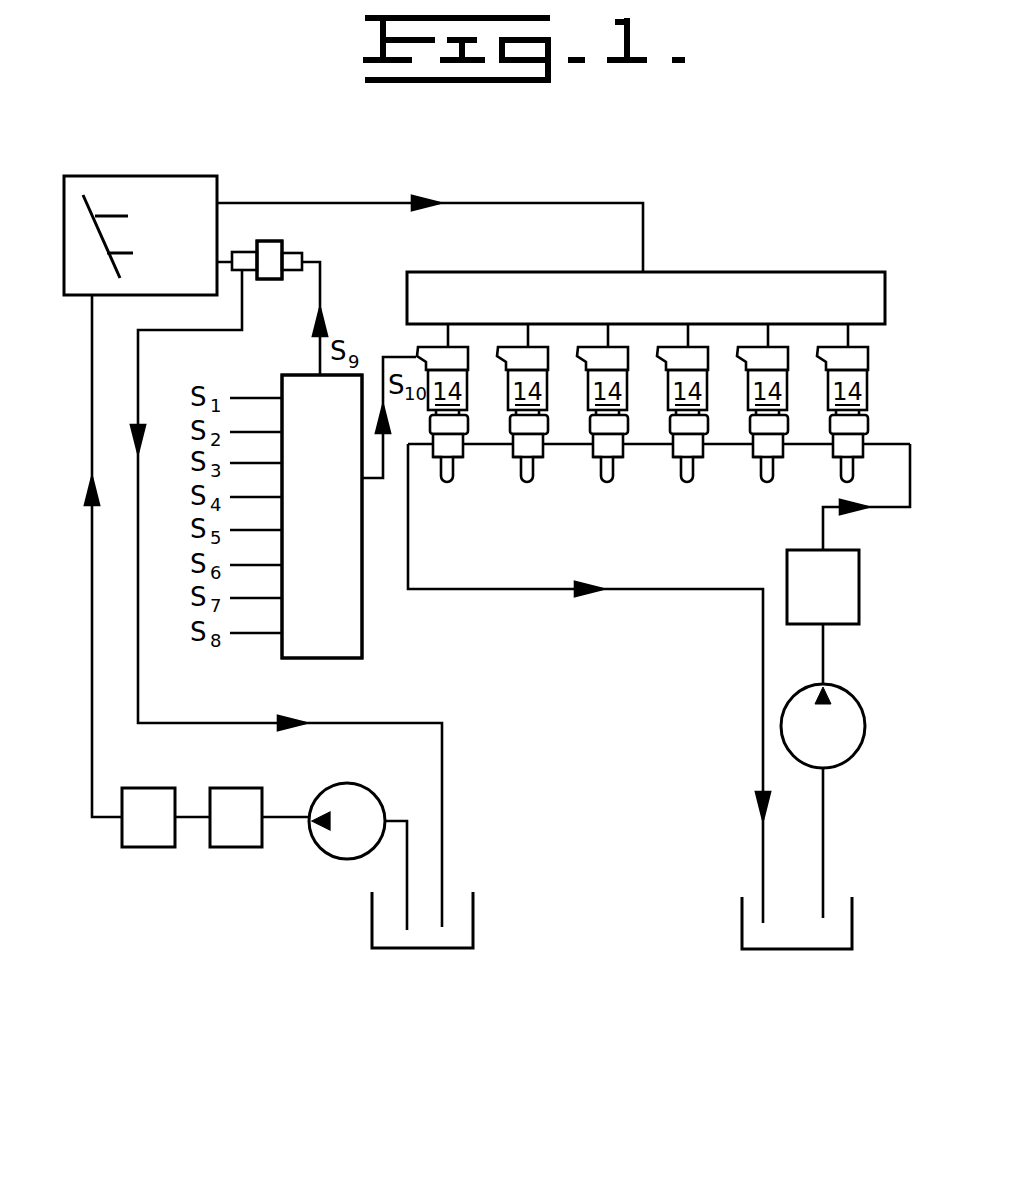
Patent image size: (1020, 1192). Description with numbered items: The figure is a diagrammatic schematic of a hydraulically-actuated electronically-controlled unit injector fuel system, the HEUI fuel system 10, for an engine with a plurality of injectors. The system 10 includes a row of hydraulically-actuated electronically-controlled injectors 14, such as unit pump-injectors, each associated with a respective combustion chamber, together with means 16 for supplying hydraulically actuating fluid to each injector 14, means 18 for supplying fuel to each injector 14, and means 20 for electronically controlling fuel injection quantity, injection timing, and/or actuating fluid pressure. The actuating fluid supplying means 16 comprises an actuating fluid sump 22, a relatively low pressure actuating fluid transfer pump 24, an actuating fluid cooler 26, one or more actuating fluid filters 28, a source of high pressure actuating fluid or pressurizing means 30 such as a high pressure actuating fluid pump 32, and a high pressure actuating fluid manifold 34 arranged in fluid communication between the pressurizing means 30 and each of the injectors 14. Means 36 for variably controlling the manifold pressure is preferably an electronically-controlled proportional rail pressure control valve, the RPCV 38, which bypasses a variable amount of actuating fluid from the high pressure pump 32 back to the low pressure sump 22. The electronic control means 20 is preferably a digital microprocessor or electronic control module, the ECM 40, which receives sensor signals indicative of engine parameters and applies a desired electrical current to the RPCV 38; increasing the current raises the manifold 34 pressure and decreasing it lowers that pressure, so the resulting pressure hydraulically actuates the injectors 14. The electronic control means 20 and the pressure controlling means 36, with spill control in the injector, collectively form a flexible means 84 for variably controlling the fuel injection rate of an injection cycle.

The HEUI fuel system 10 is at (798, 158).
The hydraulically-actuated electronically-controlled injectors 14 is at (642, 403).
The means for supplying hydraulically actuating fluid 16 is at (452, 988).
The means for supplying fuel 18 is at (778, 977).
The means for electronically controlling 20 is at (350, 675).
The actuating fluid sump 22 is at (390, 950).
The actuating fluid transfer pump 24 is at (340, 859).
The actuating fluid cooler 26 is at (237, 847).
The actuating fluid filter 28 is at (150, 847).
The means for pressurizing actuating fluid 30 is at (121, 147).
The high pressure actuating fluid pump 32 is at (186, 176).
The high pressure actuating fluid manifold 34 is at (888, 292).
The means for variably controlling actuating fluid pressure 36 is at (312, 244).
The rail pressure control valve (RPCV) 38 is at (262, 279).
The electronic control module (ECM) 40 is at (309, 527).
The flexible means for variably controlling fuel injection rate 84 is at (460, 150).